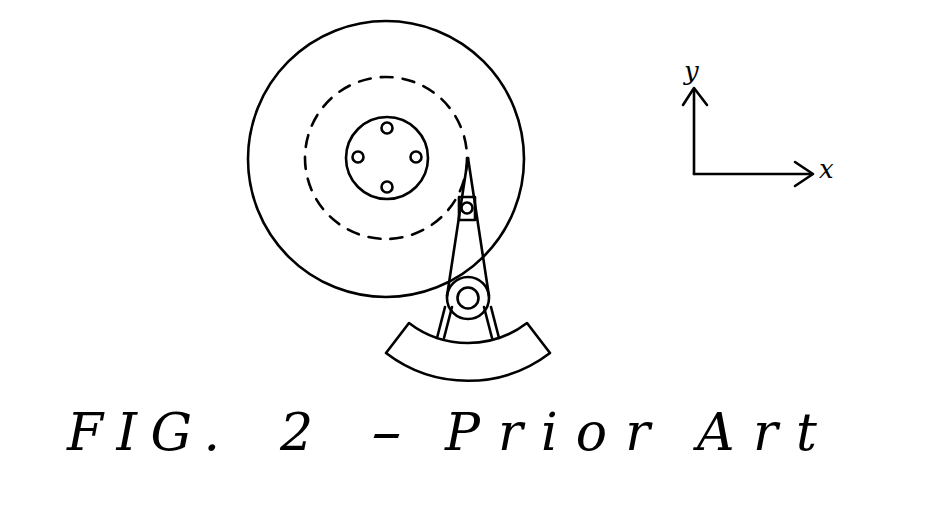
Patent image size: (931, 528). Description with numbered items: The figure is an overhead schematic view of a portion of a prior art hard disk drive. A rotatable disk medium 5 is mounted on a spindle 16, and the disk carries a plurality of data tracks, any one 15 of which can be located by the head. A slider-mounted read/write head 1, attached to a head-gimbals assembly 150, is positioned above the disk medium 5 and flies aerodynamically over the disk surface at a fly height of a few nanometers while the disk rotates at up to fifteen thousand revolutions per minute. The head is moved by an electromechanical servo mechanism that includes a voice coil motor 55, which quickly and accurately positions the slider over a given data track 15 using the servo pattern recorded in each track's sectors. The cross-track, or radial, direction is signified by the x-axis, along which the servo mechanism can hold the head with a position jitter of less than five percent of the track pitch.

The rotatable disk medium 5 is at (277, 72).
The data track 15 is at (305, 150).
The spindle 16 is at (424, 137).
The slider-mounted read/write head 1 is at (468, 158).
The head-gimbals assembly 150 is at (476, 208).
The voice coil motor 55 is at (468, 298).